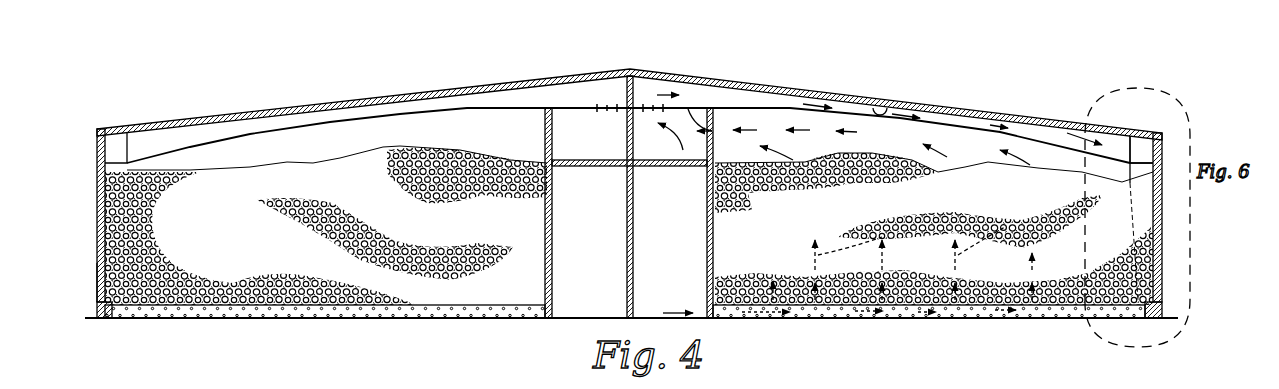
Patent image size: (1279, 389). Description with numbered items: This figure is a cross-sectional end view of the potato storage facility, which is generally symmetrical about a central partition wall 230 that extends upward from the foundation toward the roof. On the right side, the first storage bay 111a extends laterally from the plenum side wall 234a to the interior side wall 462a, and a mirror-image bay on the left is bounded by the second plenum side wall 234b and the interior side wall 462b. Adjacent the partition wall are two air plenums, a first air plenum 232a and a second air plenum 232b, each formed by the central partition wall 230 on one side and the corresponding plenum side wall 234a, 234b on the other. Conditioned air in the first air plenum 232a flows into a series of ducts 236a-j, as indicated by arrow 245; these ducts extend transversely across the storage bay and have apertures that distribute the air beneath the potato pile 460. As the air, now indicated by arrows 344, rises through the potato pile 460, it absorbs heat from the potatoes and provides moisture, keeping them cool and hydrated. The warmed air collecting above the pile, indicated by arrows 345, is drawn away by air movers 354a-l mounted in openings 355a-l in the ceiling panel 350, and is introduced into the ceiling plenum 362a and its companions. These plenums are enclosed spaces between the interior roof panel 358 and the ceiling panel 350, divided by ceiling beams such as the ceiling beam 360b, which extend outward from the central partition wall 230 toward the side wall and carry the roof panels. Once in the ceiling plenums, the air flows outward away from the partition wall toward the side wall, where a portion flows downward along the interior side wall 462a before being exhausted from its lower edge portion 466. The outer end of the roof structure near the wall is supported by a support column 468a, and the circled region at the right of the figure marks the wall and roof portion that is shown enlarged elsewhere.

The first storage bay 111a is at (937, 137).
The central partition wall 230 is at (632, 73).
The first air plenum 232a is at (692, 243).
The second air plenum 232b is at (612, 243).
The first plenum side wall 234a is at (714, 222).
The second plenum side wall 234b is at (545, 223).
The ducts 236a-j is at (910, 318).
The arrow indicating air flow into plenum and ducts 245 is at (681, 312).
The arrows indicating cooling air 344 is at (880, 222).
The arrows indicating warmed air 345 is at (658, 93).
The ceiling panel 350 is at (735, 130).
The air movers 354a-l is at (638, 104).
The openings 355a-l is at (650, 112).
The interior roof panel 358 is at (897, 100).
The ceiling beam 360b is at (766, 97).
The ceiling plenum 362a is at (732, 105).
The potato pile 460 is at (951, 162).
The interior side wall 462a is at (1136, 262).
The interior side wall 462b is at (97, 265).
The lower edge portion 466 is at (1188, 320).
The support column 468a is at (1147, 173).